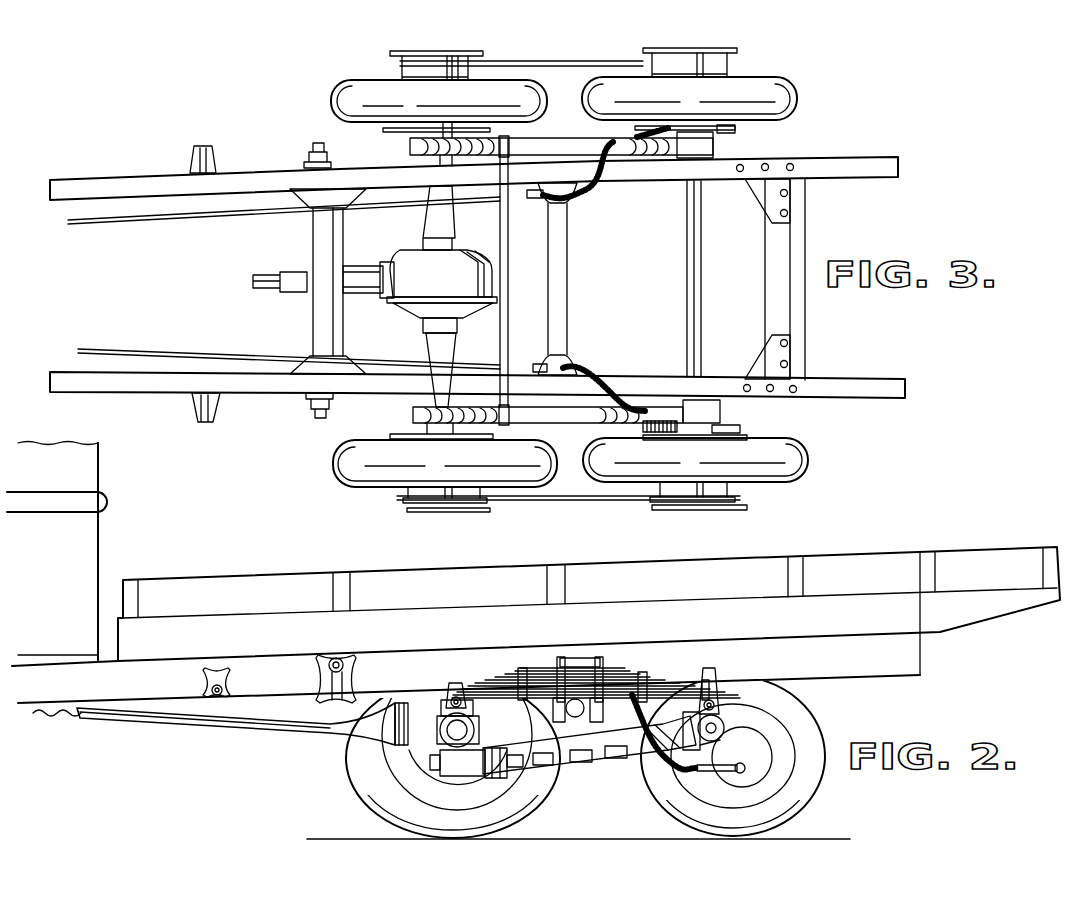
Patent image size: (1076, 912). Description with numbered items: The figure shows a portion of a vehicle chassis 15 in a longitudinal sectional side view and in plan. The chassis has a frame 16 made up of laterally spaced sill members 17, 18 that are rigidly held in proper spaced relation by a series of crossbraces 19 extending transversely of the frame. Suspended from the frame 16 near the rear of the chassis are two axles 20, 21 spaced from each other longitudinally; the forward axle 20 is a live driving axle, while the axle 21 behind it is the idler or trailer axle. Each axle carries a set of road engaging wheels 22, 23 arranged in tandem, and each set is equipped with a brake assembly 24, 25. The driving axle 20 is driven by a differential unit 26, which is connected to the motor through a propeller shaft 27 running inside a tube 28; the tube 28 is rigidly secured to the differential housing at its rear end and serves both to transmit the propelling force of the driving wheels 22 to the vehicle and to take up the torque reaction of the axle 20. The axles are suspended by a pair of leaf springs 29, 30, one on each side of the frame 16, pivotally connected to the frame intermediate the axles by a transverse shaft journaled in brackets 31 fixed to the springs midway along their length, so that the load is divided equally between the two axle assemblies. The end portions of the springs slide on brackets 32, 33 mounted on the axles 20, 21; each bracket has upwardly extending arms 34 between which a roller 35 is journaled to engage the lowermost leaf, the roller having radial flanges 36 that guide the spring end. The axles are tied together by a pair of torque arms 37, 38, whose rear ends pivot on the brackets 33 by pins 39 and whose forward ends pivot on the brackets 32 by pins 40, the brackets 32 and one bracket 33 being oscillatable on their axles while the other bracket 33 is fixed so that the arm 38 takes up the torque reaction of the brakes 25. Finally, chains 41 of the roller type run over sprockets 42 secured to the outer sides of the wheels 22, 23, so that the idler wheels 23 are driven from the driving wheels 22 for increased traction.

In FIG. 2, the vehicle chassis 15 is at (312, 571).
In FIG. 3, the frame 16 is at (63, 368).
In FIG. 3, the sill member 17 is at (163, 387).
In FIG. 2, the sill member 17 is at (857, 647).
In FIG. 3, the sill member 18 is at (93, 186).
In FIG. 3, the crossbrace 19 is at (342, 340).
In FIG. 3, the axle 20 is at (448, 353).
In FIG. 3, the axle 21 is at (702, 338).
In FIG. 3, the road engaging wheels 22 is at (341, 483).
In FIG. 3, the road engaging wheels 23 is at (794, 97).
In FIG. 3, the brake assembly 24 is at (494, 438).
In FIG. 3, the brake assembly 25 is at (749, 435).
In FIG. 2, the brake assembly 25 is at (764, 720).
In FIG. 3, the differential unit 26 is at (455, 262).
In FIG. 3, the propeller shaft 27 is at (255, 275).
In FIG. 3, the tube 28 is at (351, 273).
In FIG. 3, the leaf spring 29 is at (588, 412).
In FIG. 3, the leaf spring 30 is at (627, 142).
In FIG. 2, the bracket 31 is at (583, 658).
In FIG. 2, the bracket 32 is at (462, 713).
In FIG. 2, the bracket 33 is at (722, 720).
In FIG. 2, the arm 34 is at (463, 683).
In FIG. 2, the roller 35 is at (447, 707).
In FIG. 2, the flange 36 is at (563, 713).
In FIG. 2, the torque arm 37 is at (590, 808).
In FIG. 2, the torque arm 38 is at (576, 773).
In FIG. 2, the pin 39 is at (708, 761).
In FIG. 2, the pin 40 is at (485, 800).
In FIG. 3, the chain 41 is at (589, 66).
In FIG. 3, the sprocket 42 is at (400, 62).